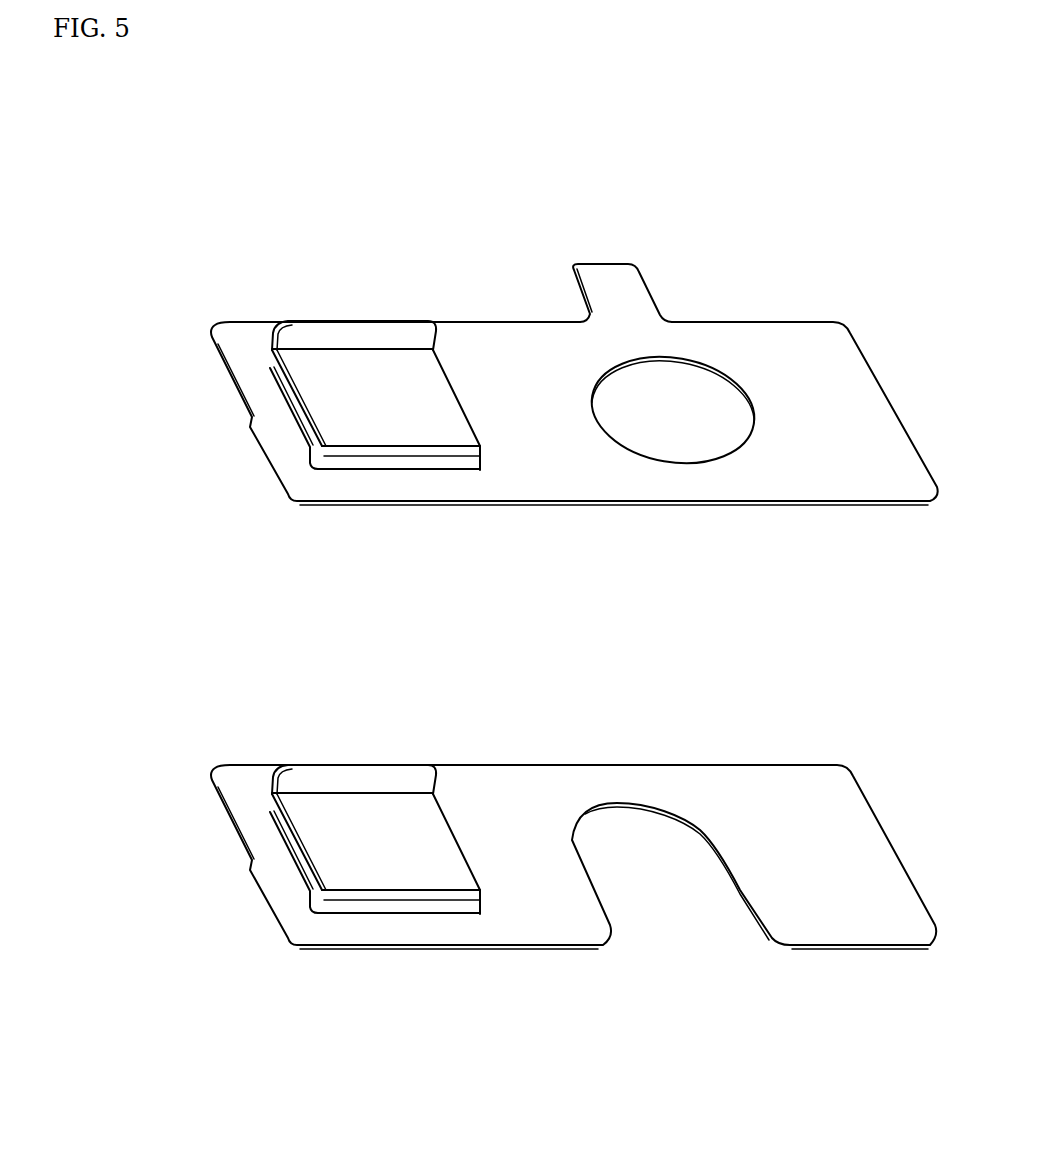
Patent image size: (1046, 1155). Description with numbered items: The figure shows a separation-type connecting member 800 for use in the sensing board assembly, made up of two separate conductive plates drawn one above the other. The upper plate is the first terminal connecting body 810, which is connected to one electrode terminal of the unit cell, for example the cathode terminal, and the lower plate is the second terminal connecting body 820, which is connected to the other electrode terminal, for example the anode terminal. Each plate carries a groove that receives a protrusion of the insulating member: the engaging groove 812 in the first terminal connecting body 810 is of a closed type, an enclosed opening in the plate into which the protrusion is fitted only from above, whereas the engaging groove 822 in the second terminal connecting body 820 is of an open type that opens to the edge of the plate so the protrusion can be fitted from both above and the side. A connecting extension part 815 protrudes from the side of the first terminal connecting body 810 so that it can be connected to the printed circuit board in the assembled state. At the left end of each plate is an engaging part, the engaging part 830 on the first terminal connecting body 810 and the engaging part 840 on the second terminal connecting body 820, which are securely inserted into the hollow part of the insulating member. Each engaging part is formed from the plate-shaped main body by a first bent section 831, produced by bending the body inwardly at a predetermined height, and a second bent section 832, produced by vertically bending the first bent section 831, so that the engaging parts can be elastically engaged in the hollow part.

The separation-type connecting member 800 is at (106, 120).
The first terminal connecting body 810 is at (854, 429).
The engaging groove 812 is at (698, 427).
The connecting extension part 815 is at (592, 277).
The second terminal connecting body 820 is at (841, 866).
The engaging groove 822 is at (628, 833).
The engaging part 830 is at (252, 360).
The first bent section 831 is at (281, 461).
The second bent section 832 is at (465, 463).
The engaging part 840 is at (258, 793).